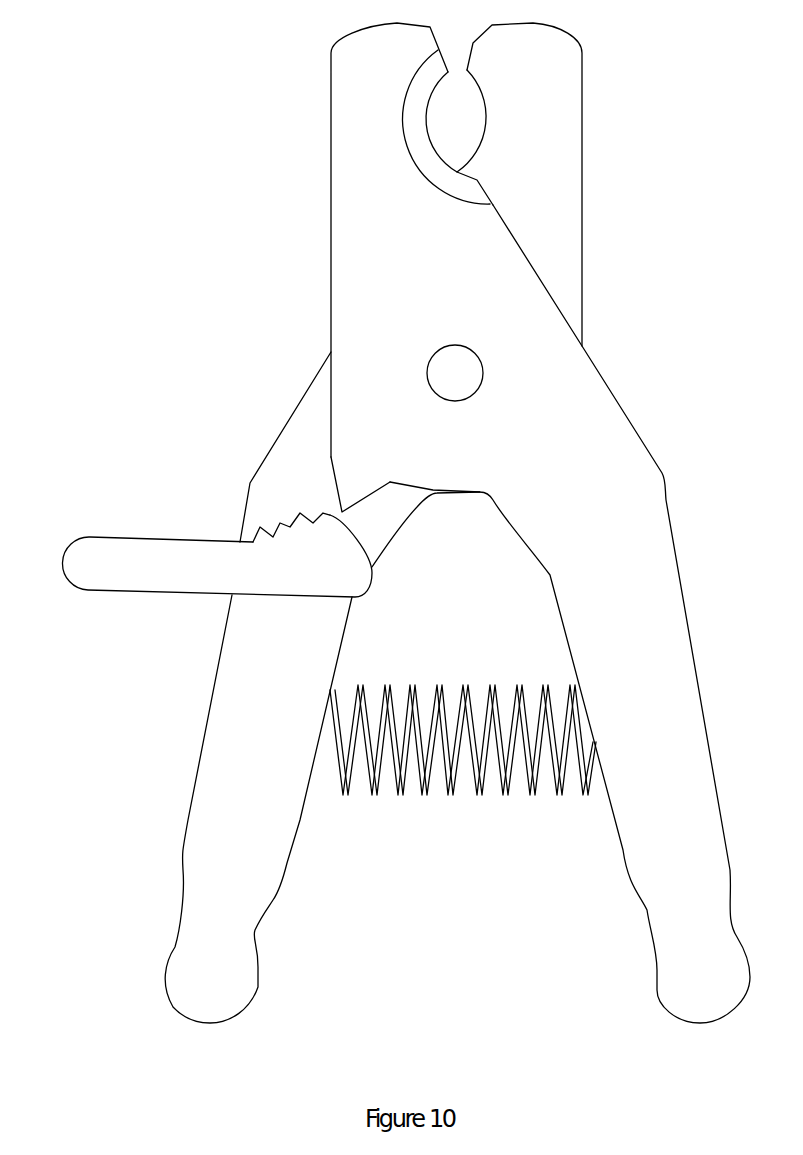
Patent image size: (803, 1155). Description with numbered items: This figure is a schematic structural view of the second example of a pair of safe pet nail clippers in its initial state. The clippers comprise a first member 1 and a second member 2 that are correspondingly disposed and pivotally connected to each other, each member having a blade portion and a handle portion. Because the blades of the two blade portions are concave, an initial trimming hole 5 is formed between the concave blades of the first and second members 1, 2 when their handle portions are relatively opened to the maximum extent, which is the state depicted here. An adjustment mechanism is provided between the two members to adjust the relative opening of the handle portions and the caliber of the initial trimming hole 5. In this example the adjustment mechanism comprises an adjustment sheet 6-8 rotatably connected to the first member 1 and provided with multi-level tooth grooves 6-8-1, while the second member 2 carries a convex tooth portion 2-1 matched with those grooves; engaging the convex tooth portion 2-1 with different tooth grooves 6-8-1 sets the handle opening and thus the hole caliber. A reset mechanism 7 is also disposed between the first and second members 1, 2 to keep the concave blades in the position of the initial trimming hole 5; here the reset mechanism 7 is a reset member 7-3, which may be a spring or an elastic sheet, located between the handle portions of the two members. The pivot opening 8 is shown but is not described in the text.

The first member 1 is at (228, 762).
The second member 2 is at (487, 523).
The convex tooth portion 2-1 is at (347, 489).
The initial trimming hole 5 is at (463, 117).
The pivot hole 8 is at (461, 372).
The adjustment sheet 6-8 is at (194, 498).
The tooth grooves 6-8-1 is at (268, 528).
The reset mechanism 7 is at (463, 777).
The reset member 7-3 is at (425, 793).